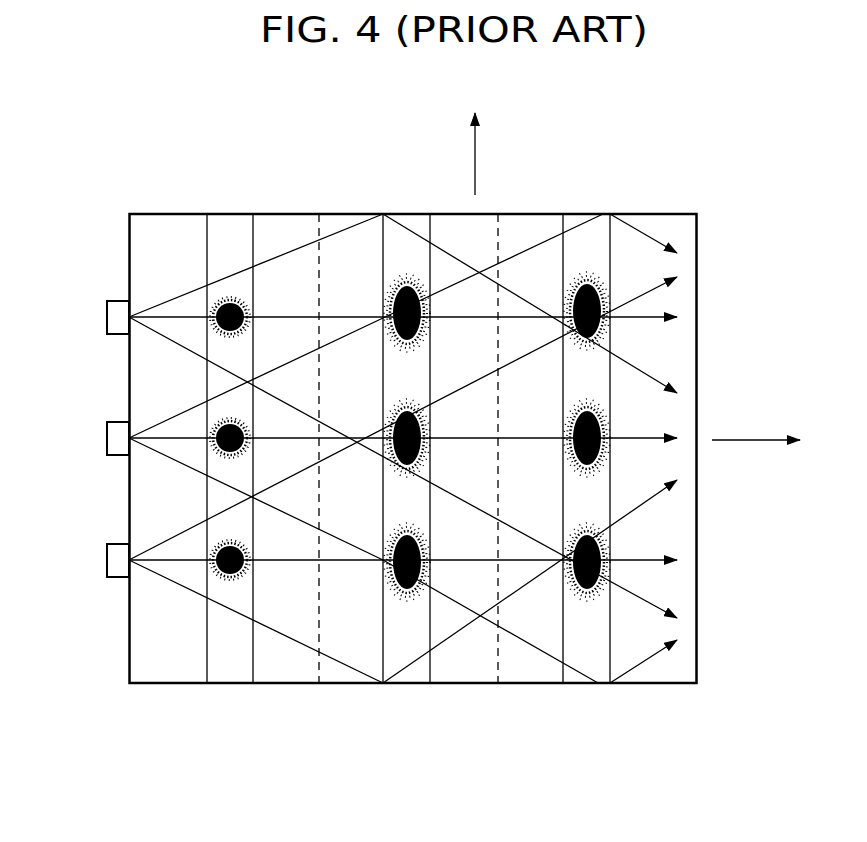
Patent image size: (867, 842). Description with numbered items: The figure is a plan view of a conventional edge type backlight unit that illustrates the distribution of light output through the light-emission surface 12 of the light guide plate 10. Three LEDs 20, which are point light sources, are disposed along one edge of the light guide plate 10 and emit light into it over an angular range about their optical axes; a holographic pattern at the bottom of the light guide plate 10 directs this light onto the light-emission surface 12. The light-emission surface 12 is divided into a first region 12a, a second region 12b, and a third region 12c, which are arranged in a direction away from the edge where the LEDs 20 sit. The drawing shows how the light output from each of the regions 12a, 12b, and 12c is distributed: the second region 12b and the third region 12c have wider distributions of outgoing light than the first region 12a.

The light guide plate 10 is at (513, 203).
The light-emission surface 12 is at (678, 228).
The first region 12a is at (130, 685).
The second region 12b is at (320, 685).
The third region 12c is at (498, 685).
The LED 20 is at (117, 545).